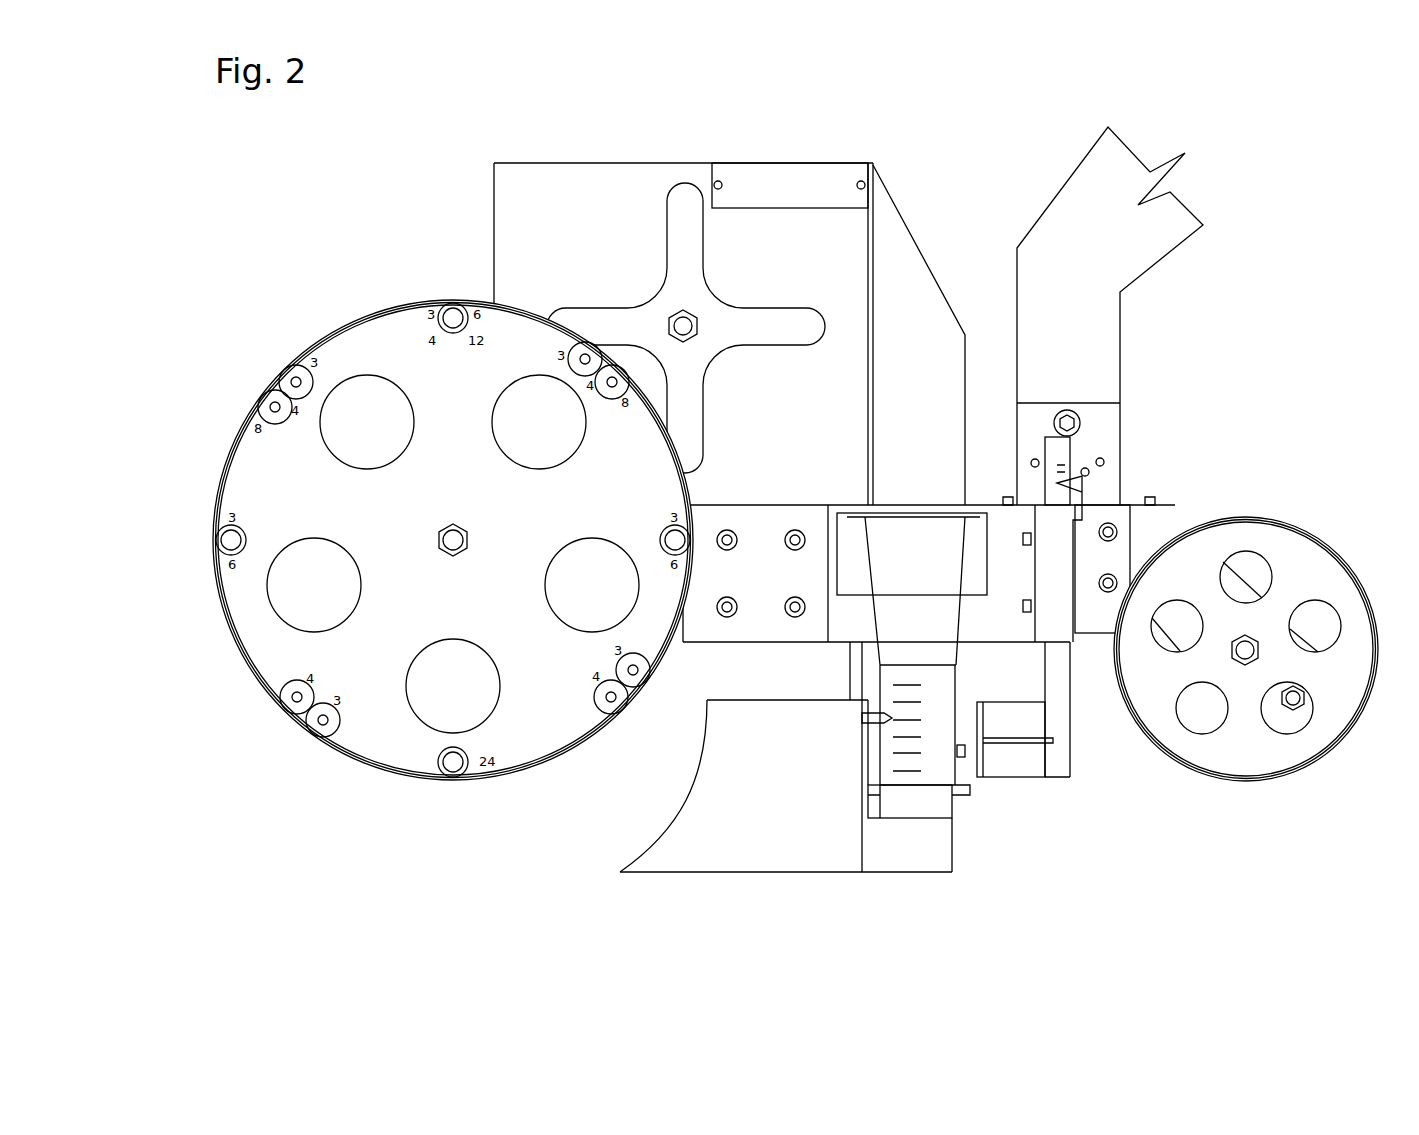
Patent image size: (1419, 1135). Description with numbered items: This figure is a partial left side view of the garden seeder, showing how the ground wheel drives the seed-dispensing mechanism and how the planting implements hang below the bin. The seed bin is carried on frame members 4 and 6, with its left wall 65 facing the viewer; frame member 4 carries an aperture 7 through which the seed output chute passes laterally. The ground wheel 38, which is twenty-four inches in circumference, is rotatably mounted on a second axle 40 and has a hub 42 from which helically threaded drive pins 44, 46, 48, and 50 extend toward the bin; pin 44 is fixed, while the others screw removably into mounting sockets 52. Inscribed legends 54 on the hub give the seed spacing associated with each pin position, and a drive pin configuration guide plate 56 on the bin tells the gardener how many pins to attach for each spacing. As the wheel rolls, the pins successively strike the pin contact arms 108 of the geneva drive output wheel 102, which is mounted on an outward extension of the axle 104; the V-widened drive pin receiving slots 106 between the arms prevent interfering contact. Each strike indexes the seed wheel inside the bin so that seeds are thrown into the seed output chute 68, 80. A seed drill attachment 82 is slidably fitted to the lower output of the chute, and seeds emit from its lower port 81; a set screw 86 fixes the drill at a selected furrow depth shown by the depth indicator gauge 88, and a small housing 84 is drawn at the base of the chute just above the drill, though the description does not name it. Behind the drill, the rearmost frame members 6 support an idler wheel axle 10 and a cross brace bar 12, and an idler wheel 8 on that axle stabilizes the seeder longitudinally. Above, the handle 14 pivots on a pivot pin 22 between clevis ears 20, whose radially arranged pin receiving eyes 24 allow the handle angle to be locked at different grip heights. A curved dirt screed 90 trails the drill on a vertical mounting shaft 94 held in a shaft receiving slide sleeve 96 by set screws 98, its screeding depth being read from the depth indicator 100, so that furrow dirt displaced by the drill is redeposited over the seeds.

The frame member 4 is at (710, 633).
The rearmost frame members 6 is at (1177, 521).
The aperture 7 is at (1003, 527).
The idler wheel 8 is at (1333, 750).
The idler wheel axle 10 is at (1245, 659).
The cross brace bar 12 is at (1290, 703).
The handle 14 is at (1138, 238).
The clevis ears 20 is at (1103, 420).
The pivot pin 22 is at (1077, 412).
The pin receiving eyes 24 is at (1104, 460).
The ground wheel 38 is at (345, 322).
The second axle 40 is at (450, 538).
The hub 42 is at (265, 643).
The fixed drive pin 44 is at (453, 766).
The drive pin 46 is at (228, 540).
The drive pin 48 is at (453, 316).
The drive pin 50 is at (690, 554).
The mounting sockets 52 is at (294, 372).
The inscribed legends 54 is at (260, 434).
The drive pin configuration guide plate 56 is at (851, 172).
The left wall 65 is at (523, 188).
The seed output chute 68 is at (905, 310).
The seed output chute 80 is at (935, 625).
The lower port 81 is at (903, 872).
The seed drill attachment 82 is at (763, 852).
The lower housing 84 is at (920, 803).
The set screw 86 is at (962, 760).
The depth indicator gauge 88 is at (872, 692).
The curved dirt screed 90 is at (1023, 767).
The mounting shaft 94 is at (1060, 680).
The shaft receiving slide sleeve 96 is at (1058, 618).
The set screws 98 is at (1027, 604).
The depth indicator 100 is at (1060, 483).
The geneva drive output wheel 102 is at (683, 205).
The axle 104 is at (683, 322).
The drive pin receiving slots 106 is at (630, 262).
The pin contact arms 108 is at (812, 258).